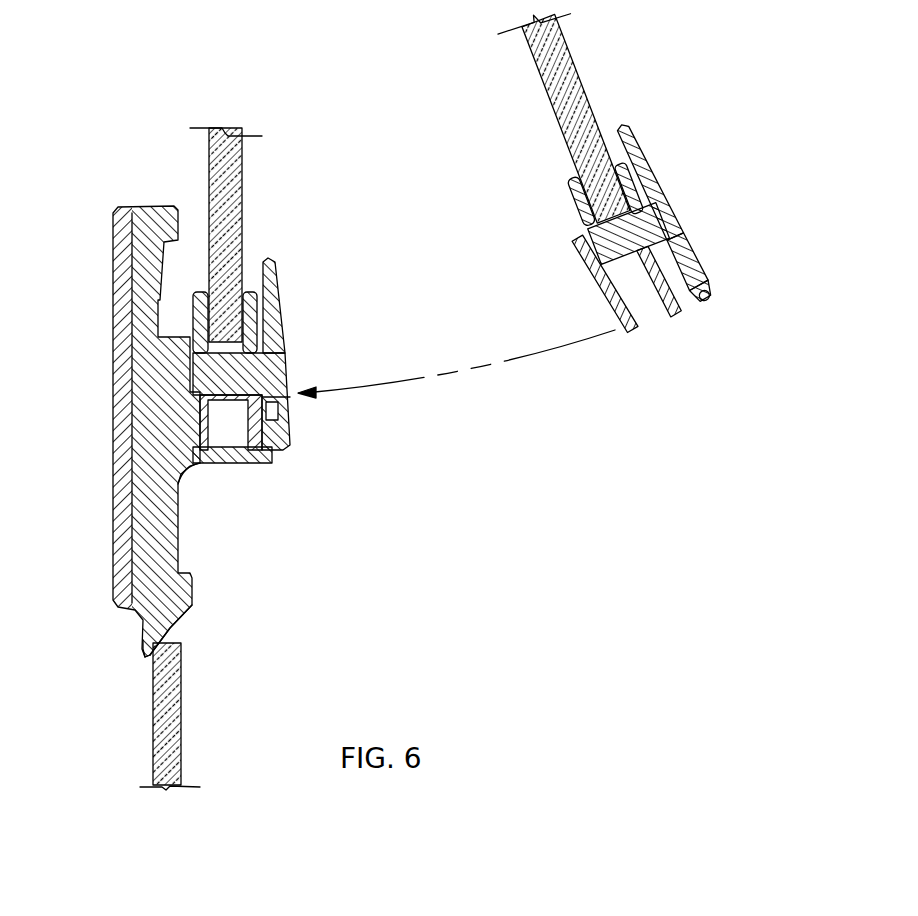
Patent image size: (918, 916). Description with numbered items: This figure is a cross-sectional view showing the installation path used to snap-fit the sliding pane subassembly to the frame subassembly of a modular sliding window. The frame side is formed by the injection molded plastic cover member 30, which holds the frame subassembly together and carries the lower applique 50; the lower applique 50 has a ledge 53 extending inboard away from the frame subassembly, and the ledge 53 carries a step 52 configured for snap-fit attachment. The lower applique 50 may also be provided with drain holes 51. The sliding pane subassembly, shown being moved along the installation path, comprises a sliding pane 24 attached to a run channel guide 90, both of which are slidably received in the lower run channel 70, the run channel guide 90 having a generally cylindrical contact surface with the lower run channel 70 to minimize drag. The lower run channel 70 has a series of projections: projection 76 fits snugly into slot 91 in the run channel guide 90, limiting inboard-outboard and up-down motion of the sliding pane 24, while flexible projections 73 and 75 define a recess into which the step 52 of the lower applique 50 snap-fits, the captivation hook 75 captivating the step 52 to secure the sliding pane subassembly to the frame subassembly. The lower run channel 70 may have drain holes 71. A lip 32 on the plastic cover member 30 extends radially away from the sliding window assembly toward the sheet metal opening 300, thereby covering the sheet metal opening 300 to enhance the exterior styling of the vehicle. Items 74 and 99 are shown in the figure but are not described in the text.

The sliding pane 24 is at (576, 82).
The injection molded plastic cover member 30 is at (113, 355).
The lip 32 is at (146, 658).
The lower applique 50 is at (180, 478).
The drain holes 51 is at (216, 450).
The step 52 is at (283, 450).
The ledge 53 is at (265, 462).
The lower run channel 70 is at (272, 262).
The drain holes 71 is at (278, 352).
The flexible projection 73 is at (663, 305).
The clip arm 74 is at (695, 252).
The captivation hook 75 is at (697, 305).
The projection 76 is at (652, 200).
The run channel guide 90 is at (566, 184).
The slot 91 is at (603, 285).
The hook 99 is at (706, 278).
The sheet metal opening 300 is at (176, 630).